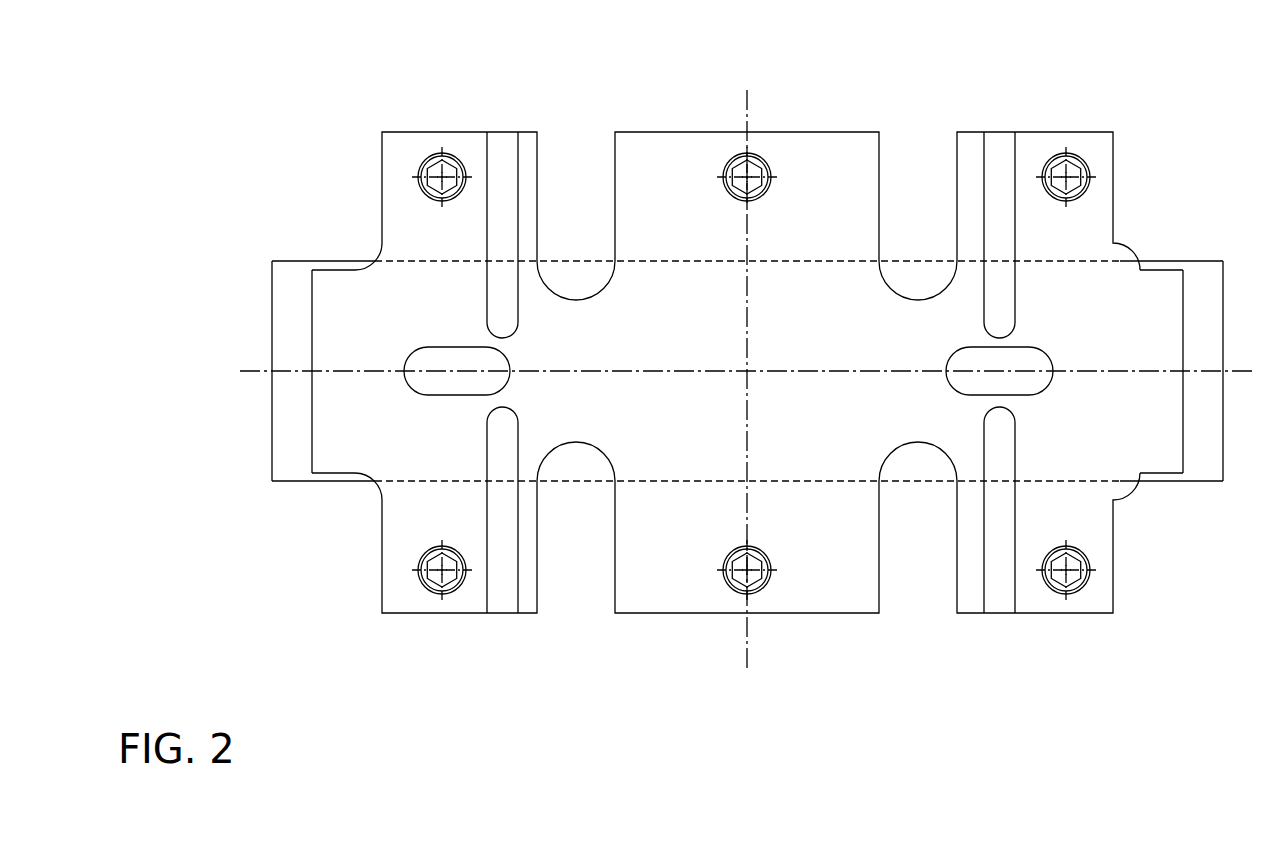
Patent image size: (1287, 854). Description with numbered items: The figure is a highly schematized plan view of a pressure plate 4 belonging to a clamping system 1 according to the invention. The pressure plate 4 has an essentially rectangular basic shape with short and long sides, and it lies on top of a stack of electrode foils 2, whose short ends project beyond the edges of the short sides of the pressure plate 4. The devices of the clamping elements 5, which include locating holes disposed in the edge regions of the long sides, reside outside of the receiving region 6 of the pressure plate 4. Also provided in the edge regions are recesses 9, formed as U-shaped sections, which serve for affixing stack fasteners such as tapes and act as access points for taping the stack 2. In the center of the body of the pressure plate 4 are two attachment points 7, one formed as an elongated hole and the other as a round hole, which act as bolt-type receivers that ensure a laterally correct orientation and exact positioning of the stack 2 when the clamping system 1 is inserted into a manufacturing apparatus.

The clamping system 1 is at (466, 102).
The stack of electrode foils 2 is at (1199, 273).
The pressure plate 4 is at (360, 293).
The clamping elements 5 is at (1075, 580).
The receiving region 6 is at (704, 293).
The attachment points 7 is at (429, 360).
The recesses 9 is at (340, 558).